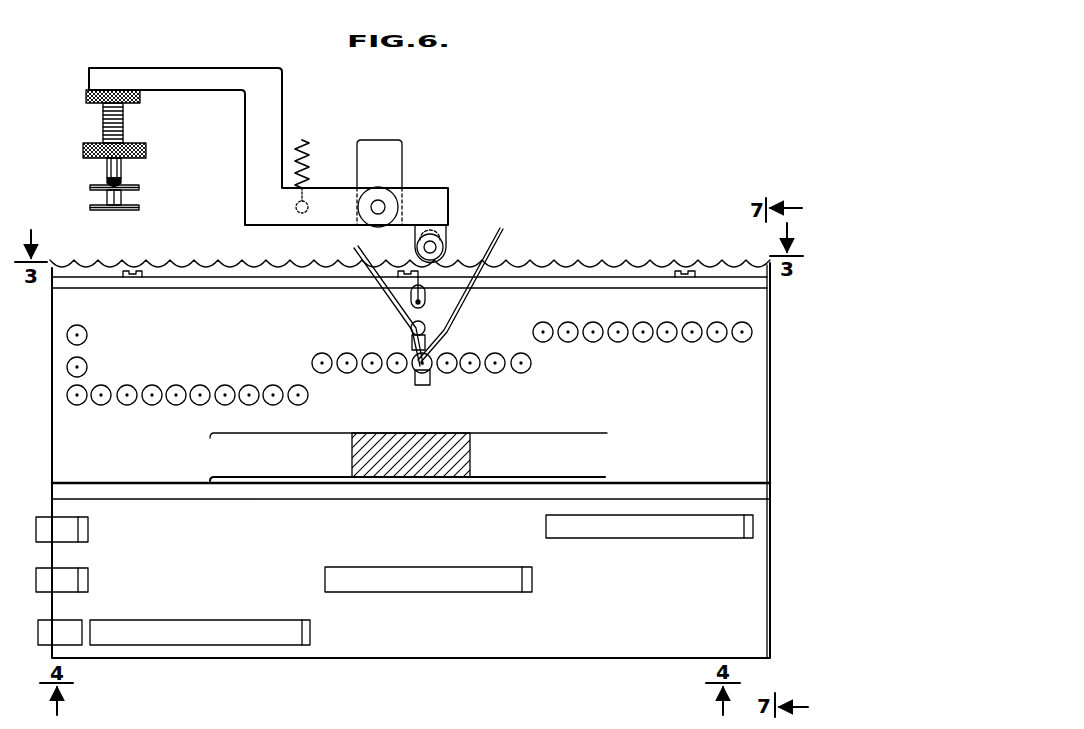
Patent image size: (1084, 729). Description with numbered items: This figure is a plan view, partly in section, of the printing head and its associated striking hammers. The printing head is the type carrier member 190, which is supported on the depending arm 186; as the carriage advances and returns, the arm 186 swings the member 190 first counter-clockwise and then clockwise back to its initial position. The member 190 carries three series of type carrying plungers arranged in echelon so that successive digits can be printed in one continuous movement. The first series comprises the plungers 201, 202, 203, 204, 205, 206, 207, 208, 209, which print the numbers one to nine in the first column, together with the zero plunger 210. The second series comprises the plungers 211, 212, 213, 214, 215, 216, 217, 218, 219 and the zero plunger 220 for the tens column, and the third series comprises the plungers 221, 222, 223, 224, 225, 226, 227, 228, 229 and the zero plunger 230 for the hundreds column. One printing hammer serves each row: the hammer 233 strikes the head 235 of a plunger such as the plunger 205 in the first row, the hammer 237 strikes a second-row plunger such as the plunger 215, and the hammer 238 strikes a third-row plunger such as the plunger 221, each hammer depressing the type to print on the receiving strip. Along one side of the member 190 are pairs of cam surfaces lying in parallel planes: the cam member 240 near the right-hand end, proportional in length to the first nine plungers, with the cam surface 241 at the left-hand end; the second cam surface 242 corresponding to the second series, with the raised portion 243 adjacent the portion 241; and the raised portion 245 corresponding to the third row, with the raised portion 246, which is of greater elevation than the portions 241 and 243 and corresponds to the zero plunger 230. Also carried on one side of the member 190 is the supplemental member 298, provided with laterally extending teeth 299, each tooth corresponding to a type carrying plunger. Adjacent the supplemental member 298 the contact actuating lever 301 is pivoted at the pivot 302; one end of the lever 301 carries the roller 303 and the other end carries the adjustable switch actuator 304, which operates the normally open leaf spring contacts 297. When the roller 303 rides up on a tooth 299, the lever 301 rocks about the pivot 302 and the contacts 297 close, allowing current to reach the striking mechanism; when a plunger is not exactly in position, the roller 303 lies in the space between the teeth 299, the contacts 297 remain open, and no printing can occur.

The depending arm 186 is at (470, 450).
The type carrier member 190 is at (757, 439).
The type carrying plunger 201 is at (742, 322).
The type carrying plunger 202 is at (715, 327).
The type carrying plunger 203 is at (692, 322).
The type carrying plunger 204 is at (665, 327).
The type carrying plunger 205 is at (643, 322).
The type carrying plunger 206 is at (616, 326).
The type carrying plunger 207 is at (593, 322).
The type carrying plunger 208 is at (566, 326).
The type carrying plunger 209 is at (543, 322).
The zero plunger 210 is at (87, 335).
The type carrying plunger 211 is at (521, 373).
The type carrying plunger 212 is at (495, 373).
The type carrying plunger 213 is at (470, 373).
The type carrying plunger 214 is at (447, 373).
The type carrying plunger 215 is at (431, 372).
The type carrying plunger 216 is at (397, 373).
The type carrying plunger 217 is at (372, 373).
The type carrying plunger 218 is at (347, 373).
The type carrying plunger 219 is at (322, 373).
The zero plunger 220 is at (87, 367).
The type carrying plunger 221 is at (298, 405).
The type carrying plunger 222 is at (273, 405).
The type carrying plunger 223 is at (249, 405).
The type carrying plunger 224 is at (225, 405).
The type carrying plunger 225 is at (200, 405).
The type carrying plunger 226 is at (176, 405).
The type carrying plunger 227 is at (152, 405).
The type carrying plunger 228 is at (127, 405).
The type carrying plunger 229 is at (101, 405).
The zero plunger 230 is at (77, 405).
The printing hammer 233 is at (425, 304).
The head 235 is at (644, 344).
The printing hammer 237 is at (412, 338).
The printing hammer 238 is at (414, 385).
The cam member 240 is at (651, 533).
The cam surface 241 is at (68, 535).
The cam surface 242 is at (478, 572).
The raised portion 243 is at (68, 587).
The raised portion 245 is at (278, 630).
The raised portion 246 is at (53, 637).
The leaf spring contacts 297 is at (126, 198).
The supplemental member 298 is at (580, 276).
The teeth 299 is at (652, 263).
The contact actuating lever 301 is at (323, 195).
The pivot 302 is at (380, 205).
The roller 303 is at (446, 254).
The adjustable switch actuator 304 is at (124, 132).